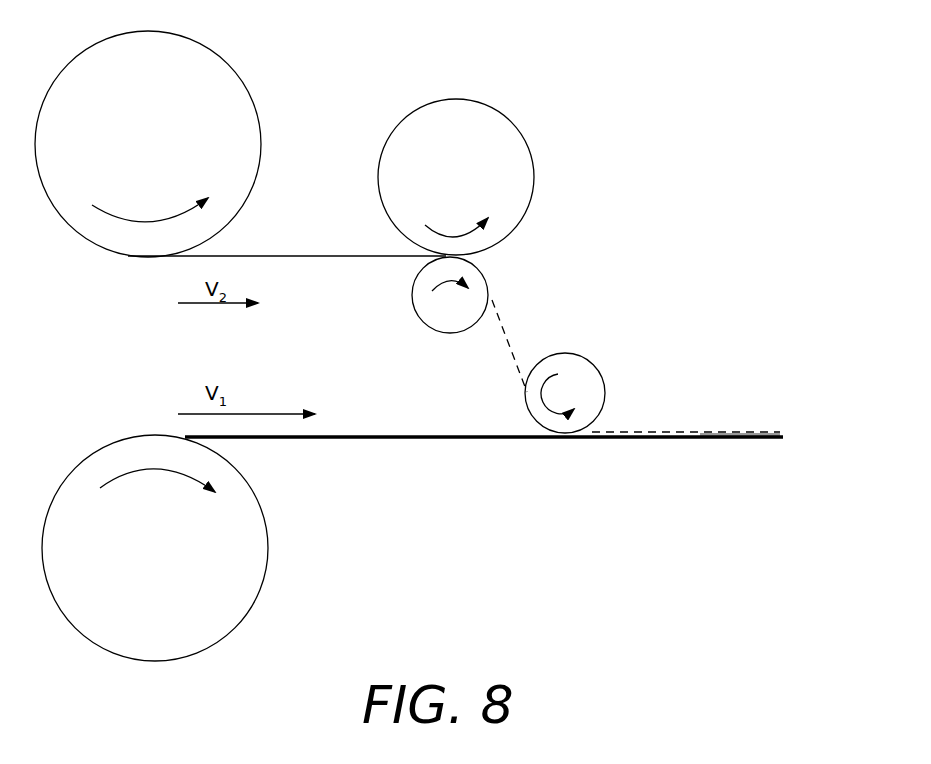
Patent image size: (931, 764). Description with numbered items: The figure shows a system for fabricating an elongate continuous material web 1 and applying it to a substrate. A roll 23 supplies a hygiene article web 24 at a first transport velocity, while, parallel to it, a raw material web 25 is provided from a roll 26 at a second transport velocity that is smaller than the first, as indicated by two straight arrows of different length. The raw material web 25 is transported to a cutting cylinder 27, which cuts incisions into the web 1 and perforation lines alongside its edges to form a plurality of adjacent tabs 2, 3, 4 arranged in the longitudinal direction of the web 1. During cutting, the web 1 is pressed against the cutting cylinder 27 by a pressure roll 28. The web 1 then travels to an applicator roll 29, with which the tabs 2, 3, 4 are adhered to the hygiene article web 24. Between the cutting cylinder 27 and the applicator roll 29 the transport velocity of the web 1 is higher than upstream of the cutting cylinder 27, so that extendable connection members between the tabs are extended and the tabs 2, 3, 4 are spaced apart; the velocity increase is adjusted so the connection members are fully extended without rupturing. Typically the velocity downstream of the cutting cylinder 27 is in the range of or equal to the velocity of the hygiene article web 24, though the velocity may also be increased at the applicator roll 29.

The elongate continuous material web 1 is at (508, 341).
The tab 2 is at (712, 432).
The tab 3 is at (733, 432).
The tab 4 is at (752, 432).
The roll 23 is at (137, 567).
The hygiene article web 24 is at (365, 440).
The raw material web 25 is at (345, 256).
The roll 26 is at (130, 163).
The cutting cylinder 27 is at (438, 195).
The pressure roll 28 is at (437, 297).
The applicator roll 29 is at (588, 386).